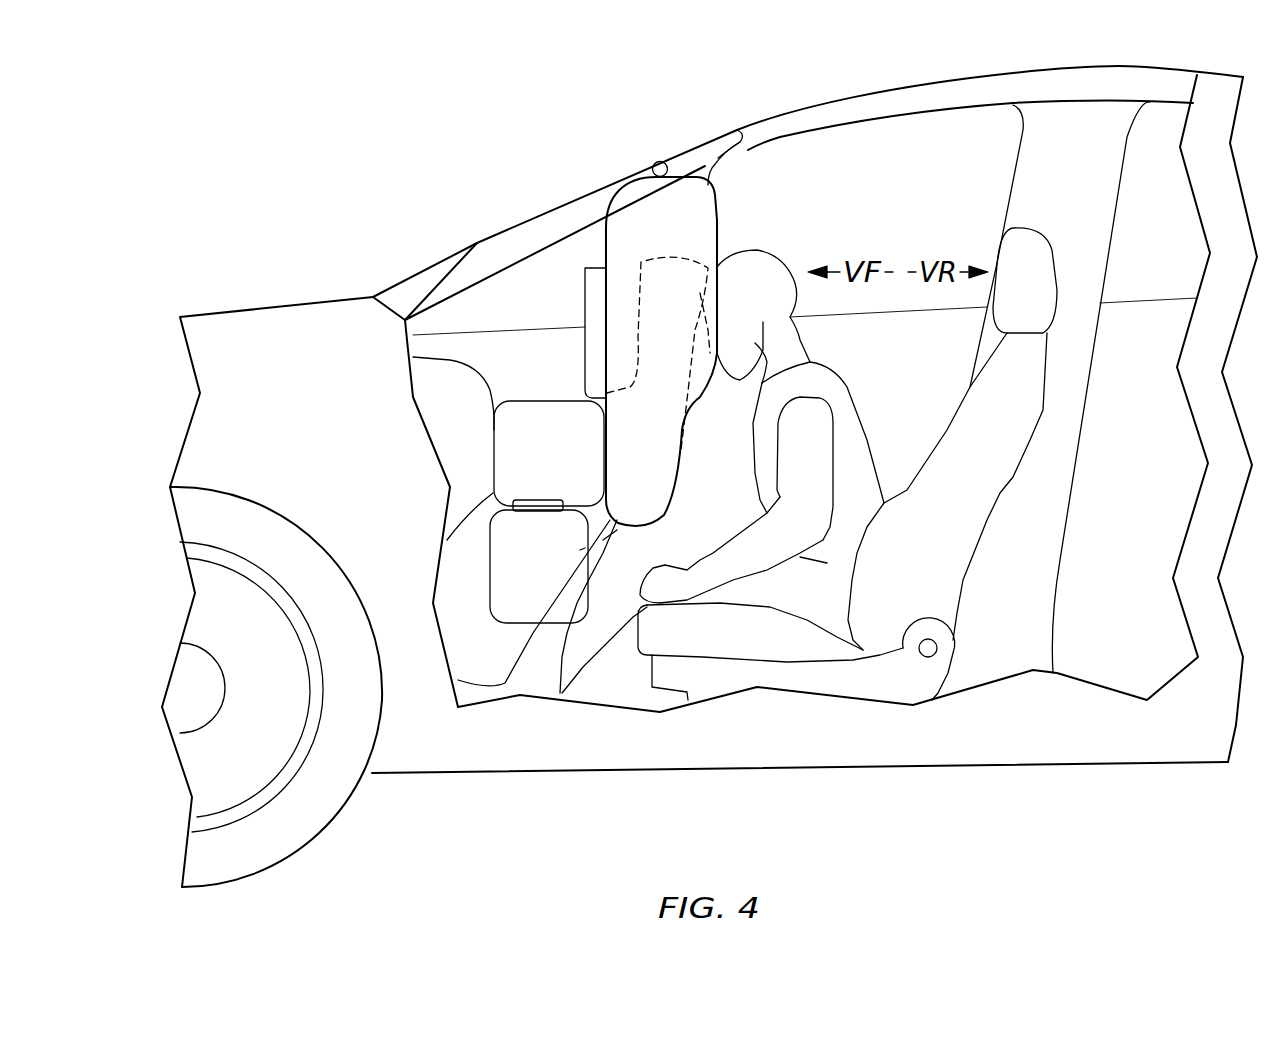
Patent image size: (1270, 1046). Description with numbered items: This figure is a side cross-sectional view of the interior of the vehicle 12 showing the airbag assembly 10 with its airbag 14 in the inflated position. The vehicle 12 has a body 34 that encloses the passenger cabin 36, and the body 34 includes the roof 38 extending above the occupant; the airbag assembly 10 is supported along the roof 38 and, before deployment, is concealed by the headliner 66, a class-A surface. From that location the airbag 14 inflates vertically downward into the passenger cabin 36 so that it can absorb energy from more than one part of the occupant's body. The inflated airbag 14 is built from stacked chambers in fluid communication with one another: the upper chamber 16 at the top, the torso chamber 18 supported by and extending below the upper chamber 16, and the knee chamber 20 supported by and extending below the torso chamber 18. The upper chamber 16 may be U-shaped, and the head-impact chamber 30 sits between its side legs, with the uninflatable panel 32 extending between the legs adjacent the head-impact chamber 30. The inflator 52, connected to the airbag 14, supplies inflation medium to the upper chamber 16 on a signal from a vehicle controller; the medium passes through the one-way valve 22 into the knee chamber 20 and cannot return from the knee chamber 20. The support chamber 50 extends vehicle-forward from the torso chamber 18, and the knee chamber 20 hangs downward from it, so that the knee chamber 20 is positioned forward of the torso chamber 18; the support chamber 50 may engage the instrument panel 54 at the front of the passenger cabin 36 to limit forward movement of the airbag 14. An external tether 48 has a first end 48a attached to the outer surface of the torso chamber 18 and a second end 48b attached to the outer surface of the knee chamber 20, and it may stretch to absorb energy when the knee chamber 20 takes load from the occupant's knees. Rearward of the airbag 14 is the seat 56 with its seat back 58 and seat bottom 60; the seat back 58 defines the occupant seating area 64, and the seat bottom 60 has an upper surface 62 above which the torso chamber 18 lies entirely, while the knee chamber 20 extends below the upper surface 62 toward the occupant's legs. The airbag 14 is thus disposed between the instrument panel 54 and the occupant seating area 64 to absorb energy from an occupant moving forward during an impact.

The airbag assembly 10 is at (712, 137).
The vehicle 12 is at (276, 243).
The airbag 14 is at (607, 243).
The upper chamber 16 is at (718, 232).
The torso chamber 18 is at (680, 465).
The knee chamber 20 is at (493, 623).
The one-way valve 22 is at (545, 500).
The head-impact chamber 30 is at (663, 277).
The uninflatable panel 32 is at (585, 290).
The body 34 is at (535, 228).
The passenger cabin 36 is at (880, 140).
The roof 38 is at (800, 140).
The tether 48 is at (600, 535).
The first end 48a is at (620, 517).
The second end 48b is at (585, 548).
The support chamber 50 is at (548, 402).
The inflator 52 is at (655, 160).
The instrument panel 54 is at (447, 362).
The seat 56 is at (1090, 442).
The seat back 58 is at (963, 530).
The seat bottom 60 is at (687, 637).
The upper surface 62 is at (790, 613).
The occupant seating area 64 is at (935, 388).
The headliner 66 is at (732, 158).